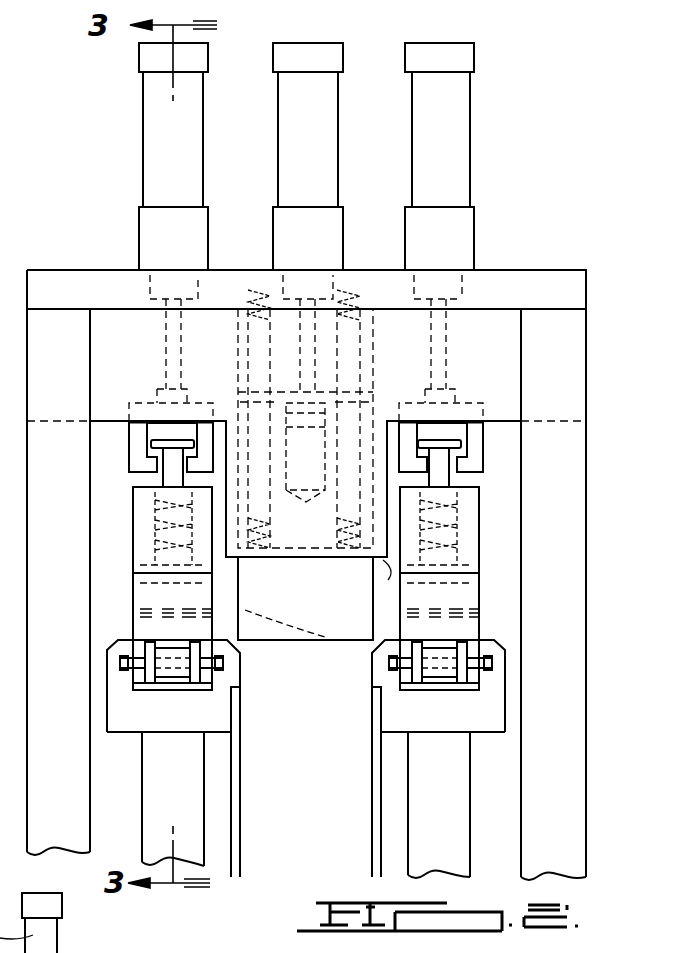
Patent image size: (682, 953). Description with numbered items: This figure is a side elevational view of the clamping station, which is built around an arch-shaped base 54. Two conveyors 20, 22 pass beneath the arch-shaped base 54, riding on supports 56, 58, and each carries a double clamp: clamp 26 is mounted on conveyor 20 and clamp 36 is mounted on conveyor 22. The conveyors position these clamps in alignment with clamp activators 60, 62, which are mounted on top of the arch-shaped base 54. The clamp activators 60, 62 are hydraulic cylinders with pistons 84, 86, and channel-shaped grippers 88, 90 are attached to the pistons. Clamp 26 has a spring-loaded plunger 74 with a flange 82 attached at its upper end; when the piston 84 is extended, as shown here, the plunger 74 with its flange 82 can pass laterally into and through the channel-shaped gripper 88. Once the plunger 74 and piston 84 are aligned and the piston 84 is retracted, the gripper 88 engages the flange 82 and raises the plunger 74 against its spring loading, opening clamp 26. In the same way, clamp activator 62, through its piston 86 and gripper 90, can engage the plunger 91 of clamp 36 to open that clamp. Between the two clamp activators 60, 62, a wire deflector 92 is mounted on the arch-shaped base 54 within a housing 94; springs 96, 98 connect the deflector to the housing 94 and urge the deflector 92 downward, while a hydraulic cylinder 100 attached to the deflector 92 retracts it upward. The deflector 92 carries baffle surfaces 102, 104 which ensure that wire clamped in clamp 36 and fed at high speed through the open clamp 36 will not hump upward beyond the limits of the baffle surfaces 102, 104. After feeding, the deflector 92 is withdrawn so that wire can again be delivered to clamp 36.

The conveyor 20 is at (144, 643).
The conveyor 22 is at (472, 639).
The double clamp 26 is at (128, 603).
The double clamp 36 is at (500, 565).
The arch-shaped base 54 is at (571, 480).
The support 56 is at (118, 734).
The support 58 is at (490, 734).
The clamp activator 60 is at (160, 157).
The clamp activator 62 is at (454, 143).
The plunger 74 is at (165, 477).
The flange portion 82 is at (152, 444).
The piston 84 is at (170, 360).
The piston 86 is at (446, 343).
The channel-shaped gripper 88 is at (137, 459).
The channel-shaped gripper 90 is at (473, 464).
The plunger 91 is at (443, 479).
The wire deflector 92 is at (303, 648).
The housing 94 is at (394, 582).
The spring 96 is at (250, 306).
The spring 98 is at (360, 305).
The hydraulic cylinder 100 is at (290, 165).
The baffle surface 102 is at (268, 612).
The baffle surface 104 is at (333, 635).